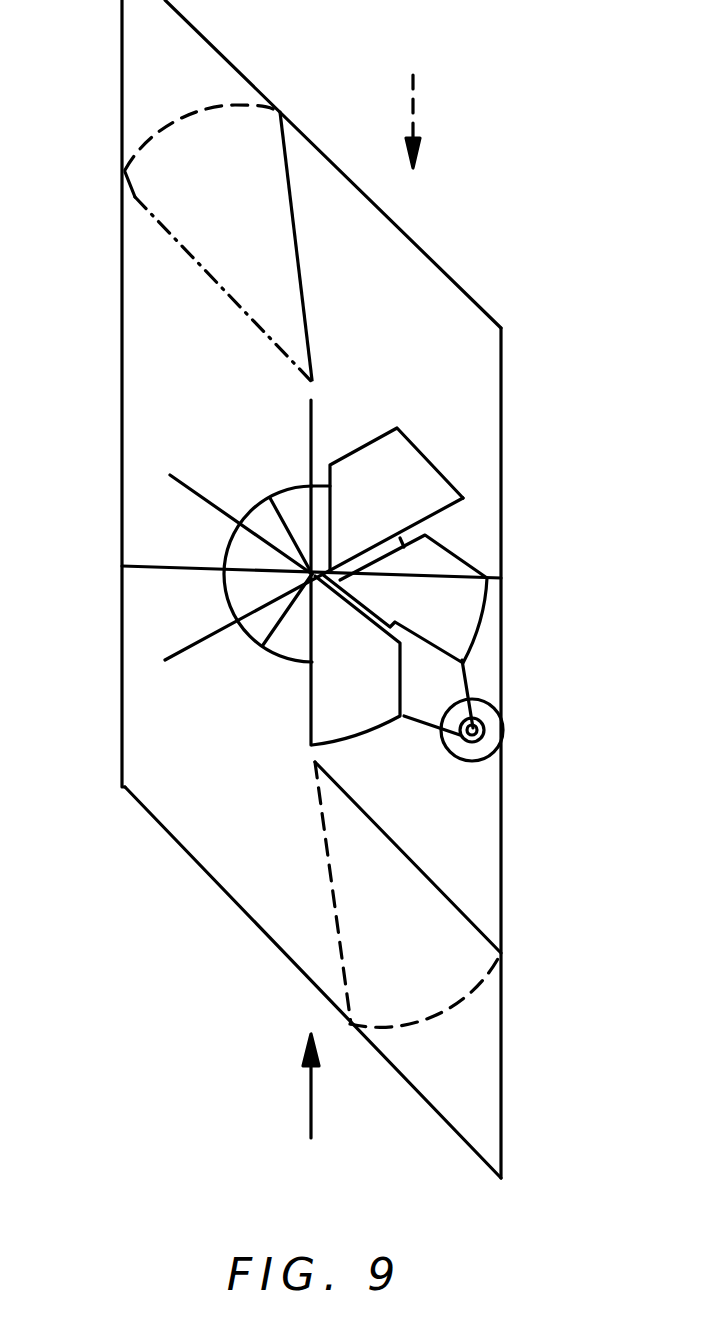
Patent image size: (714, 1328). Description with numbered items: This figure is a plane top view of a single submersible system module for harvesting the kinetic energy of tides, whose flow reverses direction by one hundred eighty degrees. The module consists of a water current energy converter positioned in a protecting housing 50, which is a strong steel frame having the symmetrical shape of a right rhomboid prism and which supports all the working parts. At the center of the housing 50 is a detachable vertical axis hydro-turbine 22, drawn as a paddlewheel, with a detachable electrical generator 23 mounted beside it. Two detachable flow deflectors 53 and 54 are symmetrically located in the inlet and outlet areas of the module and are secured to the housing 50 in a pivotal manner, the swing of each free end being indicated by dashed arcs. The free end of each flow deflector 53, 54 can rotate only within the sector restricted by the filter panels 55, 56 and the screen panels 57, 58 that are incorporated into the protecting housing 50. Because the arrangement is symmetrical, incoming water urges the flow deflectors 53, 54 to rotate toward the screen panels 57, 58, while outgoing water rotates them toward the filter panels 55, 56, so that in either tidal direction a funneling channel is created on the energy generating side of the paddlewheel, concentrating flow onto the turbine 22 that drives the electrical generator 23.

The vertical axis hydro-turbine 22 is at (243, 546).
The electrical generator 23 is at (492, 731).
The protecting housing 50 is at (316, 589).
The flow deflector 53 is at (294, 124).
The flow deflector 54 is at (477, 925).
The filter panel 55 is at (228, 56).
The filter panel 56 is at (240, 910).
The screen panel 57 is at (120, 343).
The screen panel 58 is at (503, 468).